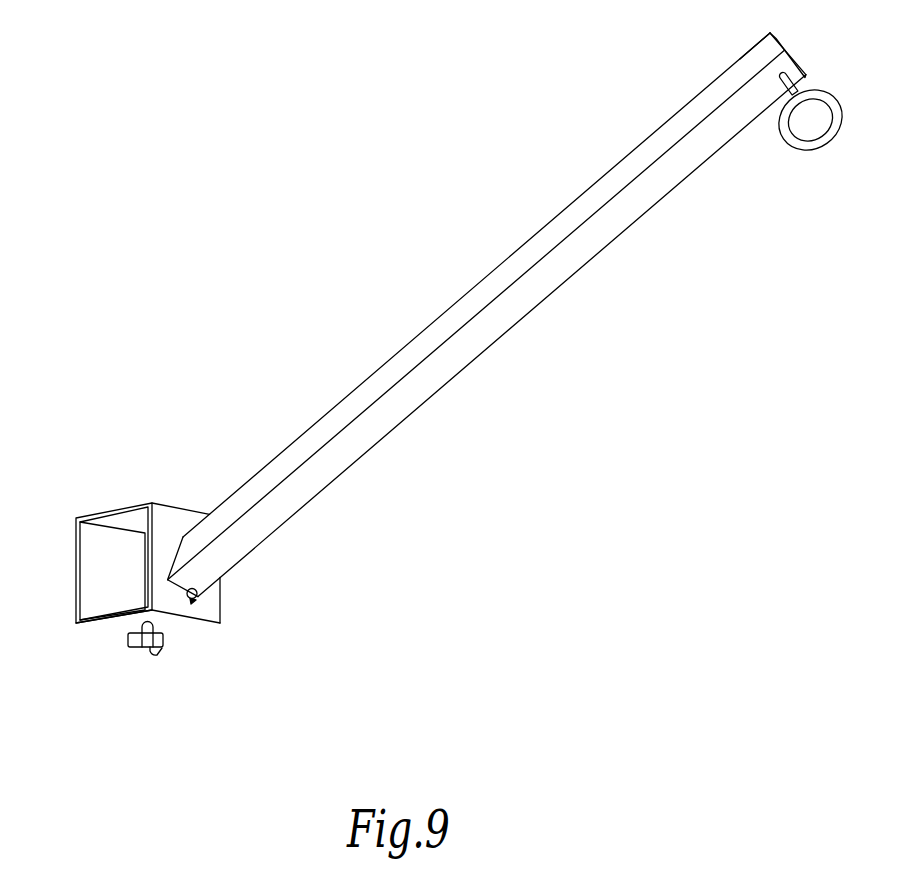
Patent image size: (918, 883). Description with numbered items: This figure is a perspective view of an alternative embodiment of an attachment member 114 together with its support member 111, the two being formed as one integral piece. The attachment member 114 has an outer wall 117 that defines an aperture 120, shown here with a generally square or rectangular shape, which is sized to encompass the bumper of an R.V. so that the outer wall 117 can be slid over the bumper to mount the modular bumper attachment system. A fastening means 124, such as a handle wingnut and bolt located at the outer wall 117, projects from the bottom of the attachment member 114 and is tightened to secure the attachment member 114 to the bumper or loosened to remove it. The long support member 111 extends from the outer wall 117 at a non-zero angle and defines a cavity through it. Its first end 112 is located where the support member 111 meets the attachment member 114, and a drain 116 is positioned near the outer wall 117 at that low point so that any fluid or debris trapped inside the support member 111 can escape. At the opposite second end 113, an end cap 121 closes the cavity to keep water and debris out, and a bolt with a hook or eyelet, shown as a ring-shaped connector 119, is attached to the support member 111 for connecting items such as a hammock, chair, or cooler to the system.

The support member 111 is at (493, 335).
The first end 112 is at (215, 564).
The second end 113 is at (757, 53).
The attachment member 114 is at (110, 489).
The drain 116 is at (196, 599).
The outer wall 117 is at (96, 652).
The connector 119 is at (810, 148).
The aperture 120 is at (91, 549).
The end cap 121 is at (795, 53).
The fastening means 124 is at (159, 652).